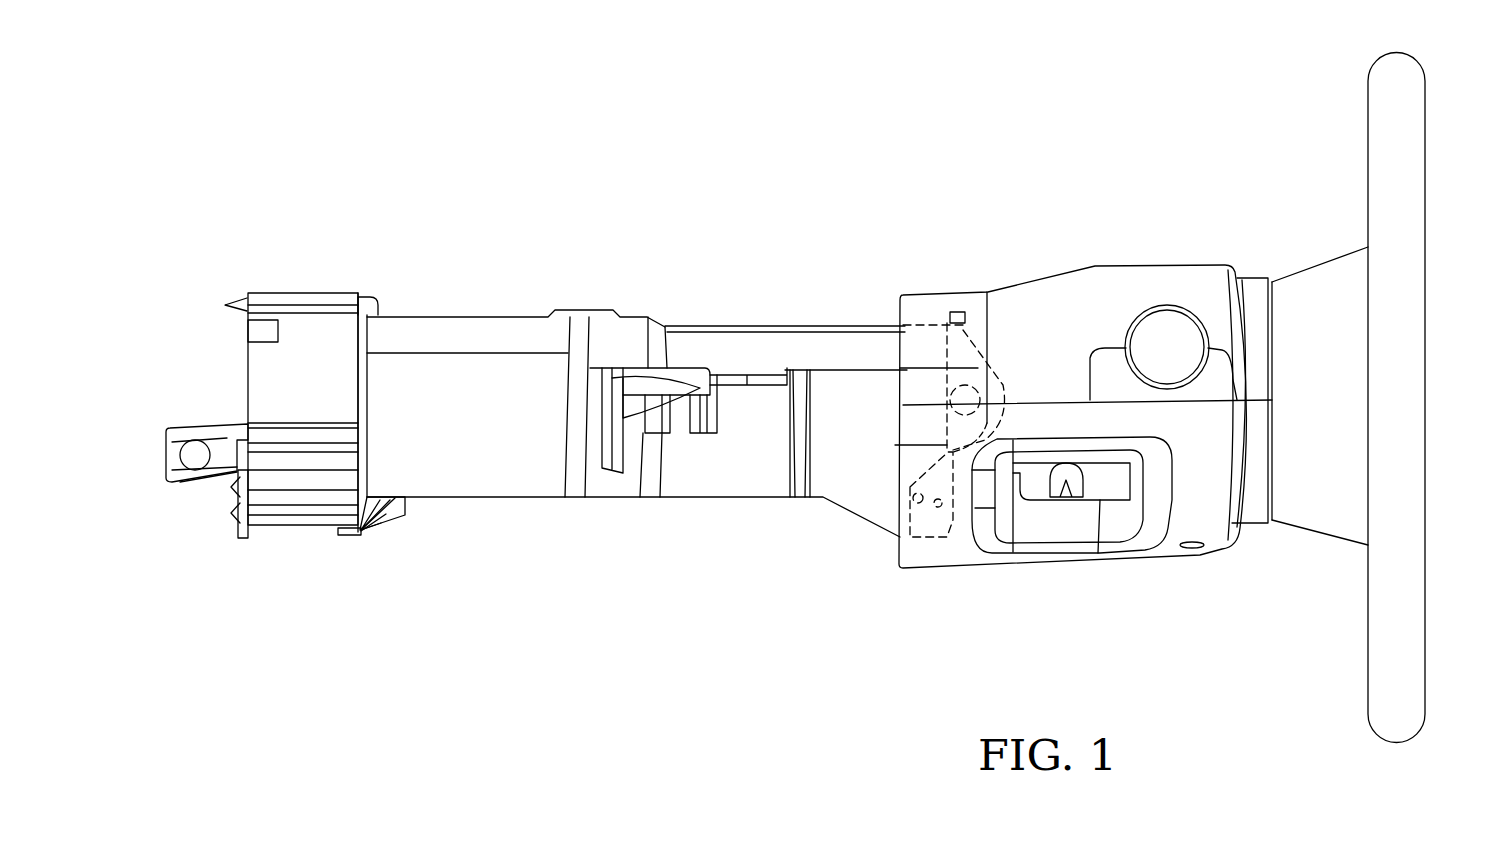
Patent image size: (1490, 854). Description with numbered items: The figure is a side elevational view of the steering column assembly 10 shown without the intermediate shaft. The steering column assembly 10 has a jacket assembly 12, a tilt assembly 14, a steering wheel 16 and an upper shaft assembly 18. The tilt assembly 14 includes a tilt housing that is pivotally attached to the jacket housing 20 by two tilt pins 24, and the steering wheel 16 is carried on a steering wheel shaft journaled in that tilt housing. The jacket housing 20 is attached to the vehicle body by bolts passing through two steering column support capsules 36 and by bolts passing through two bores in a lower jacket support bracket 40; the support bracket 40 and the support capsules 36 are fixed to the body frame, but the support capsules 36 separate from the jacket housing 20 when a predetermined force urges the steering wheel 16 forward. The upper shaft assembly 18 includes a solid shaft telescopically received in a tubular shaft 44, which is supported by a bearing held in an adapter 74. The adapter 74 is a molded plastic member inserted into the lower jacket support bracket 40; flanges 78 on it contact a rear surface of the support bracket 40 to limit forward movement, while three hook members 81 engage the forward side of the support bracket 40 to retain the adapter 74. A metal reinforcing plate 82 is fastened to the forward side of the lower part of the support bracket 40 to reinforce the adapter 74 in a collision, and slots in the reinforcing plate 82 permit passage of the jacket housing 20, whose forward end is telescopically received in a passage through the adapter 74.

The steering column assembly 10 is at (797, 272).
The jacket assembly 12 is at (655, 323).
The tilt assembly 14 is at (1183, 268).
The steering wheel 16 is at (1423, 127).
The upper shaft assembly 18 is at (200, 425).
The jacket housing 20 is at (862, 324).
The tilt pins 24 is at (972, 392).
The steering column support capsules 36 is at (700, 380).
The lower jacket support bracket 40 is at (313, 343).
The tubular shaft 44 is at (185, 480).
The adapter 74 is at (378, 525).
The flanges 78 is at (365, 378).
The hook members 81 is at (237, 302).
The metal reinforcing plate 82 is at (238, 500).